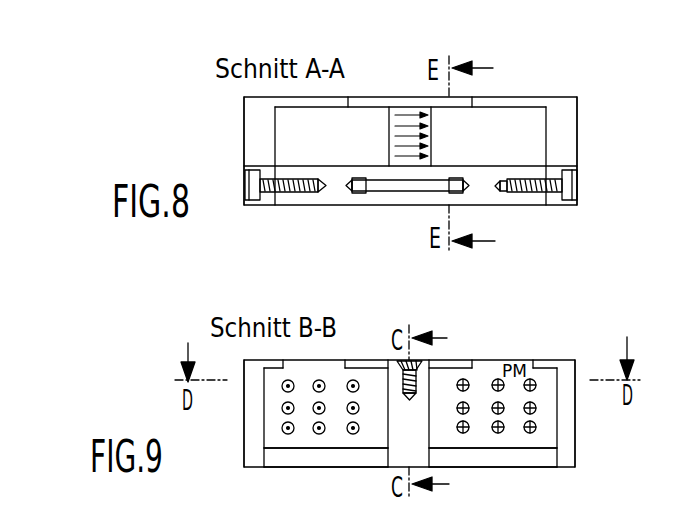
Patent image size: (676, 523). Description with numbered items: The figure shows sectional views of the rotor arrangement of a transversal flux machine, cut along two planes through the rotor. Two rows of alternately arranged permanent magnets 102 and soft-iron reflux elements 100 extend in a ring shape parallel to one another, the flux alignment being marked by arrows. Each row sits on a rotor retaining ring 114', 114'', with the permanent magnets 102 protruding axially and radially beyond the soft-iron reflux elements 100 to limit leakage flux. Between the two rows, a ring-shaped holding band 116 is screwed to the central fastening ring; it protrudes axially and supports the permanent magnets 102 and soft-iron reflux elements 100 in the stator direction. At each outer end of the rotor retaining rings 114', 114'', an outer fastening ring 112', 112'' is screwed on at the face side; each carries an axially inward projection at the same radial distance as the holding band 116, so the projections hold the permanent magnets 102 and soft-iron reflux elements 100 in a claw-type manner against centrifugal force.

In FIG. 8, the soft-iron reflux element 100 is at (368, 120).
In FIG. 8, the ring-shaped holding band 116 is at (410, 100).
In FIG. 9, the ring-shaped holding band 116 is at (368, 366).
In FIG. 8, the outer fastening ring 112' is at (226, 151).
In FIG. 9, the outer fastening ring 112' is at (240, 413).
In FIG. 8, the outer fastening ring 112'' is at (593, 151).
In FIG. 9, the outer fastening ring 112'' is at (591, 413).
In FIG. 8, the rotor retaining ring 114' is at (291, 211).
In FIG. 9, the rotor retaining ring 114' is at (326, 475).
In FIG. 8, the rotor retaining ring 114'' is at (535, 211).
In FIG. 9, the rotor retaining ring 114'' is at (506, 475).
In FIG. 9, the permanent magnet 102 is at (273, 433).